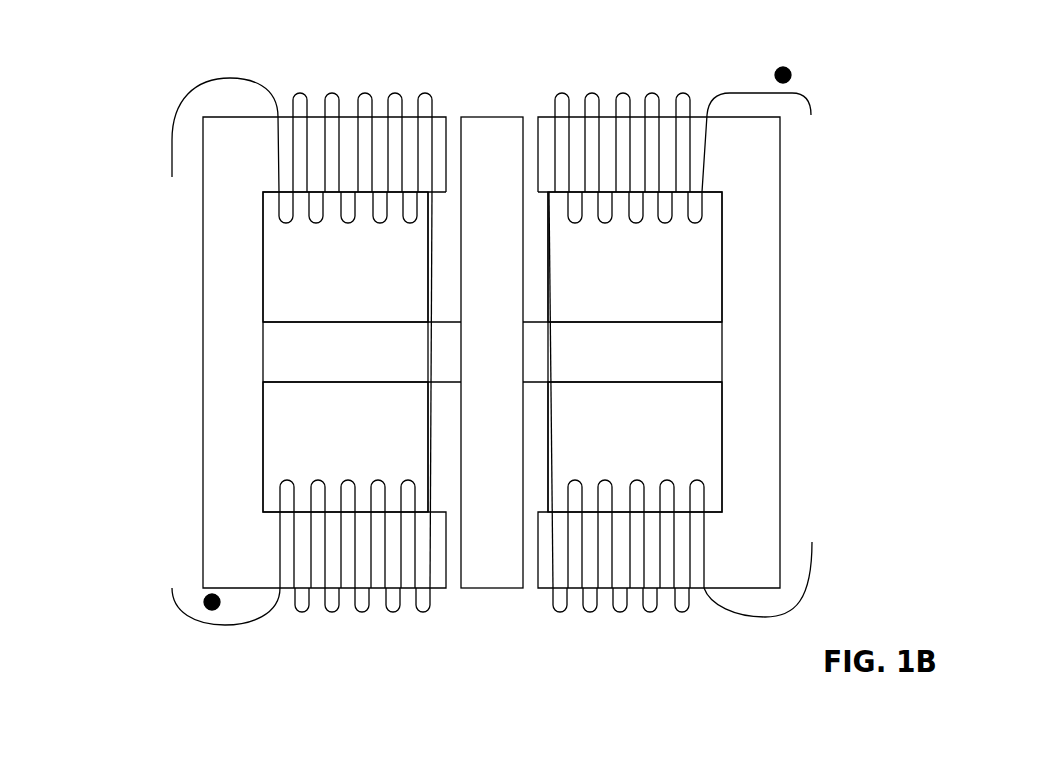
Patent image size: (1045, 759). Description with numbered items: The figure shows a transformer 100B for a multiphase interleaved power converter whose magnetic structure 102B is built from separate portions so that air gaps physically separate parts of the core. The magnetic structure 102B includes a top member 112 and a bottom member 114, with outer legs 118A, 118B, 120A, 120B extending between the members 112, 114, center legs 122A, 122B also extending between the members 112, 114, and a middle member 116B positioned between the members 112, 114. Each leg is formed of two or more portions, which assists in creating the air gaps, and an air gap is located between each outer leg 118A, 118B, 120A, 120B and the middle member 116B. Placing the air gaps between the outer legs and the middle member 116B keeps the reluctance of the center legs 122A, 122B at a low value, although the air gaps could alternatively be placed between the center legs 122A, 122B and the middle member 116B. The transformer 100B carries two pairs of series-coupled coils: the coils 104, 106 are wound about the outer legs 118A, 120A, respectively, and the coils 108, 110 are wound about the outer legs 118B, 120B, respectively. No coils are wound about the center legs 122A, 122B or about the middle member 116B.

The transformer 100B is at (155, 58).
The magnetic structure 102B is at (833, 287).
The coil 104 is at (363, 95).
The coil 106 is at (330, 607).
The coil 108 is at (593, 92).
The coil 110 is at (622, 607).
The top member 112 is at (748, 462).
The bottom member 114 is at (232, 453).
The middle member 116B is at (478, 113).
The outer leg 118A is at (394, 177).
The outer leg 118B is at (683, 175).
The outer leg 120A is at (285, 575).
The outer leg 120B is at (573, 577).
The center leg 122A is at (287, 353).
The center leg 122B is at (597, 353).